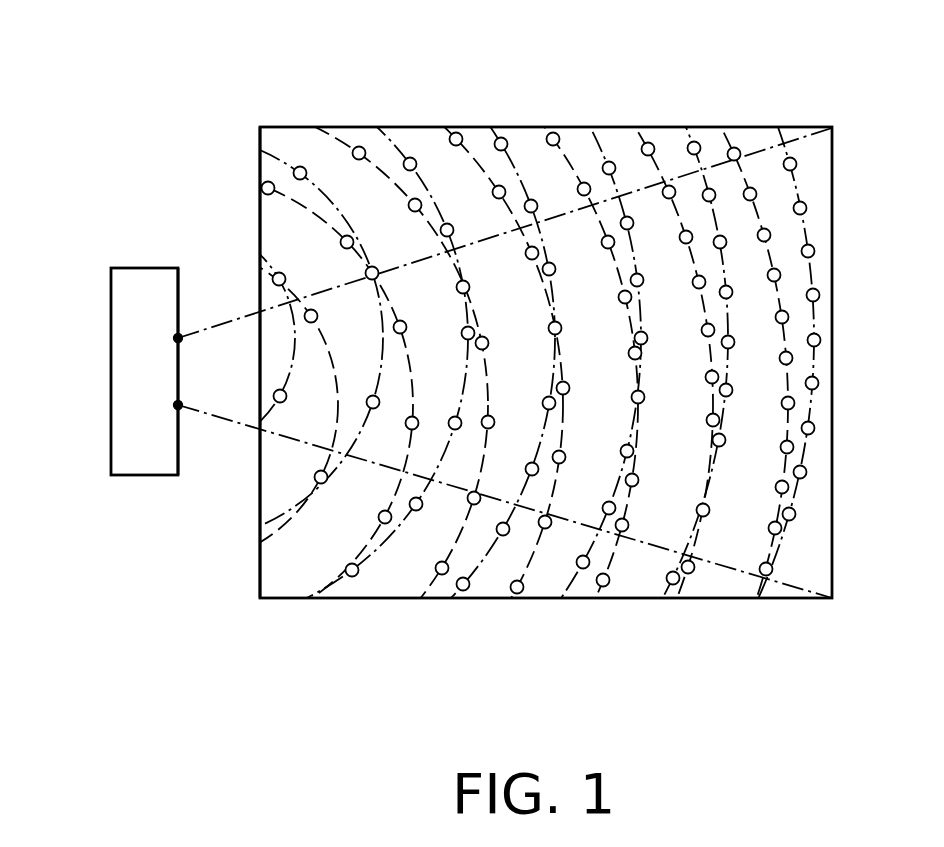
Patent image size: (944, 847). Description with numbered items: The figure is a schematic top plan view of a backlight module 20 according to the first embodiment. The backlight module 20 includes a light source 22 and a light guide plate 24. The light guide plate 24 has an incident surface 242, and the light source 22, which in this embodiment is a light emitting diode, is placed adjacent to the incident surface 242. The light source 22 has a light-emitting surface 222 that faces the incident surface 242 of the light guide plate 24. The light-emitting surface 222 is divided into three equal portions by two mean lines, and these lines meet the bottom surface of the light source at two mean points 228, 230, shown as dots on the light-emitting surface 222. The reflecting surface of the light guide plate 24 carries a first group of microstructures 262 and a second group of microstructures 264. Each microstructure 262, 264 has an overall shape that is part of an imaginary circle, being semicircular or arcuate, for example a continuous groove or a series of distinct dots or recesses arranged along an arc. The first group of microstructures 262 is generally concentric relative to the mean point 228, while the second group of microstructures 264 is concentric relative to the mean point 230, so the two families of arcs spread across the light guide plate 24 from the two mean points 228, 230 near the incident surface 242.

The backlight module 20 is at (578, 52).
The light source 22 is at (140, 378).
The light guide plate 24 is at (817, 226).
The light-emitting surface 222 is at (178, 449).
The mean point 228 is at (178, 338).
The mean point 230 is at (178, 405).
The incident surface 242 is at (260, 578).
The first group of microstructures 262 is at (293, 172).
The second group of microstructures 264 is at (397, 522).